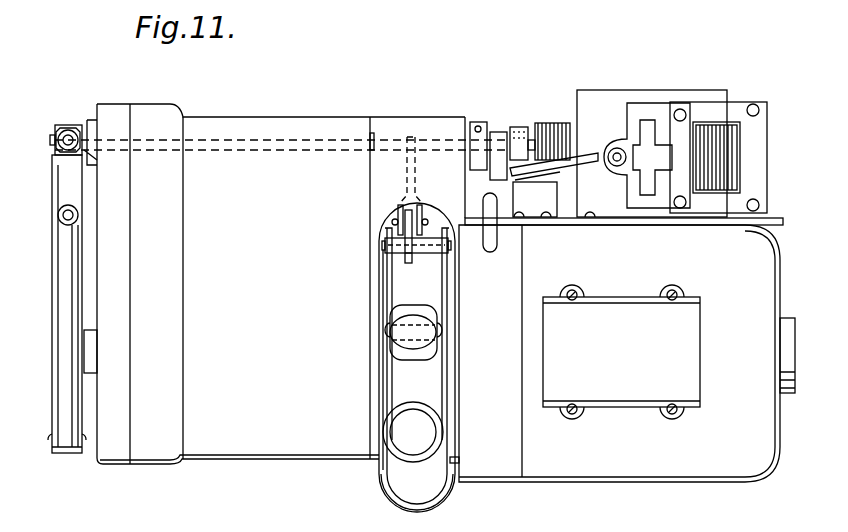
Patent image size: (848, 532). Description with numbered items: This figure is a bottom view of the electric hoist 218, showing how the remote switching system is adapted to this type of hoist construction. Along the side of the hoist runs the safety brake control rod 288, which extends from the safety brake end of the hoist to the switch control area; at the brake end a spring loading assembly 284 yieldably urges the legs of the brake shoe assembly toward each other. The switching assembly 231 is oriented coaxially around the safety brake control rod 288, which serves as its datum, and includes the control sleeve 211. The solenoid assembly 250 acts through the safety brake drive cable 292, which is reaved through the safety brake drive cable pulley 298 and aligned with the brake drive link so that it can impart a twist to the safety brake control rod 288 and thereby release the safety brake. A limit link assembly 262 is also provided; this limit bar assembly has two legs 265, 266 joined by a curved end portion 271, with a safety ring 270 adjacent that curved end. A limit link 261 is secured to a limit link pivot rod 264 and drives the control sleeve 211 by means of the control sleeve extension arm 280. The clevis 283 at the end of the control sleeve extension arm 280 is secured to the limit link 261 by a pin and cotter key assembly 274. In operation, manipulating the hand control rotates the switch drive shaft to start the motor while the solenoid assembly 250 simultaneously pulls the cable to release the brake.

The control sleeve 211 is at (435, 142).
The hoist 218 is at (362, 118).
The switching assembly 231 is at (500, 130).
The solenoid assembly 250 is at (717, 97).
The limit link 261 is at (400, 241).
The limit link assembly 262 is at (378, 343).
The limit link pivot rod 264 is at (425, 256).
The leg 265 is at (448, 372).
The leg 266 is at (385, 388).
The safety ring 270 is at (432, 405).
The curved end portion 271 is at (390, 490).
The pin and cotter key assembly 274 is at (422, 218).
The control sleeve extension arm 280 is at (402, 178).
The clevis 283 is at (393, 207).
The spring loading assembly 284 is at (58, 222).
The safety brake control rod 288 is at (290, 137).
The safety brake drive cable 292 is at (586, 158).
The safety brake drive cable pulley 298 is at (547, 124).